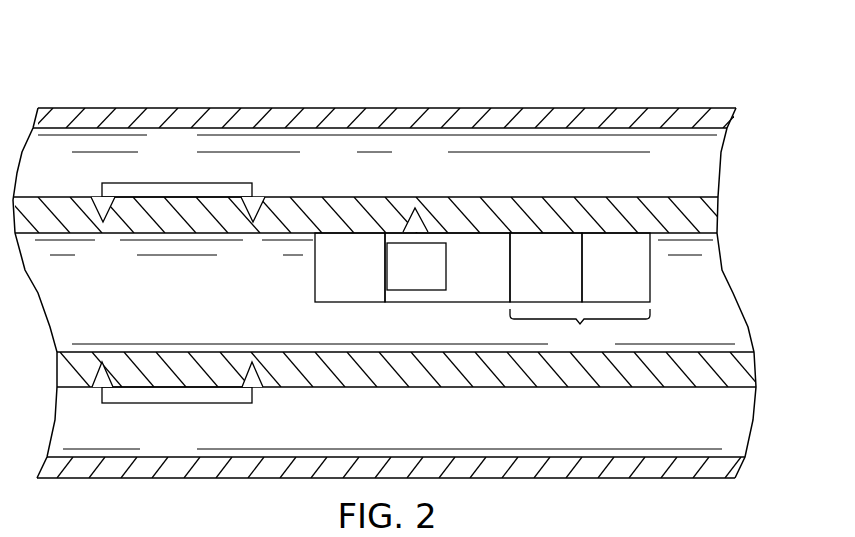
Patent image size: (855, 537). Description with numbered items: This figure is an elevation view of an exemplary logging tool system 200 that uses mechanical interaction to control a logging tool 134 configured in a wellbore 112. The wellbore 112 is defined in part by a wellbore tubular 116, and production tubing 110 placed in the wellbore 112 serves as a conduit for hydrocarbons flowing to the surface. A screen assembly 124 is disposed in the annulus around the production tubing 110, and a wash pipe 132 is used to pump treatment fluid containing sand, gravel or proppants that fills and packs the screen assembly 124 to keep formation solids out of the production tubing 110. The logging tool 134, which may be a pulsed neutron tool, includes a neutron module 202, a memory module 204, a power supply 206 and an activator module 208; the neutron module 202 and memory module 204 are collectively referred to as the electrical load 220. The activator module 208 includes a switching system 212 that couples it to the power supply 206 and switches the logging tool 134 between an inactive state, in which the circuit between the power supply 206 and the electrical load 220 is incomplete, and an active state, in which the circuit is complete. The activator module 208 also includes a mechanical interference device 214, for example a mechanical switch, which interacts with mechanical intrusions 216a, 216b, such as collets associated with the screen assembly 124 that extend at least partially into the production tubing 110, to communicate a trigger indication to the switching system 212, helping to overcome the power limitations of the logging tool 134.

The logging tool system 200 is at (535, 66).
The wellbore 112 is at (598, 107).
The wellbore tubular 116 is at (243, 118).
The production tubing 110 is at (340, 197).
The screen assembly 124 is at (177, 183).
The wash pipe 132 is at (678, 230).
The logging tool 134 is at (653, 265).
The mechanical interference device 214 is at (428, 215).
The mechanical intrusion 216a is at (118, 208).
The mechanical intrusion 216b is at (244, 208).
The power supply 206 is at (331, 283).
The activator module 208 is at (460, 283).
The switching system 212 is at (397, 280).
The memory module 204 is at (527, 283).
The neutron module 202 is at (598, 283).
The electrical load 220 is at (580, 328).